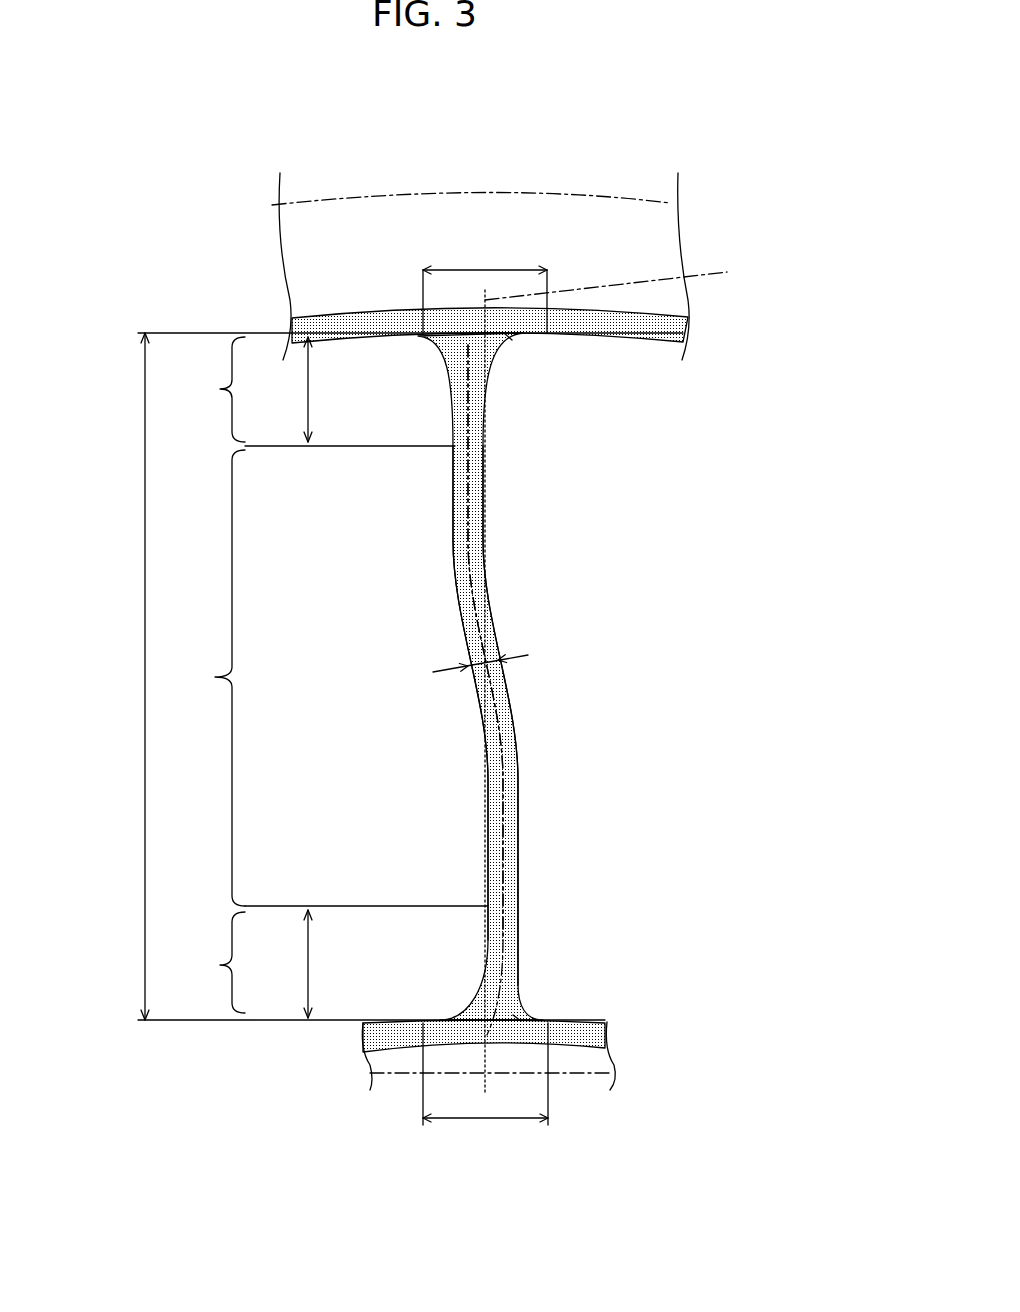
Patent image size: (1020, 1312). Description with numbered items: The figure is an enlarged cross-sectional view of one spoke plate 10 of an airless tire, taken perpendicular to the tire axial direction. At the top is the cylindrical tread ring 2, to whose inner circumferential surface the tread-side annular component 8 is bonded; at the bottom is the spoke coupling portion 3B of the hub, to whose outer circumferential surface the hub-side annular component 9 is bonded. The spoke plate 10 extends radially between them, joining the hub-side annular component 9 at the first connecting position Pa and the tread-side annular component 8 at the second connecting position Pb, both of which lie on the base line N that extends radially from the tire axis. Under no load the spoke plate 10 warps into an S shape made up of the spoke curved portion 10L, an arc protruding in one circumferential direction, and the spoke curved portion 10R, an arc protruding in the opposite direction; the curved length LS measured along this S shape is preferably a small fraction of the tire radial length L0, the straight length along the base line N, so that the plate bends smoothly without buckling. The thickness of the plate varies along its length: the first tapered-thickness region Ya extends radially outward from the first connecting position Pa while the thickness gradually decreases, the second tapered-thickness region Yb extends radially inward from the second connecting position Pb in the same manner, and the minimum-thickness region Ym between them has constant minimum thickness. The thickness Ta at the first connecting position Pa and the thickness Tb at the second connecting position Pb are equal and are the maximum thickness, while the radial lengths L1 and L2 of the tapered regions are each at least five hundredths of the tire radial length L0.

The tread ring 2 is at (600, 197).
The thickness in second connecting position Tb is at (485, 300).
The base line N is at (619, 280).
The tread-side annular component 8 is at (637, 328).
The second connecting position Pb is at (508, 335).
The spoke plate 10 is at (560, 578).
The spoke curved portion 10L is at (452, 547).
The spoke curved portion 10R is at (518, 857).
The curved length LS is at (500, 772).
The first connecting position Pa is at (517, 1018).
The hub-side annular component 9 is at (582, 1035).
The spoke coupling portion 3B is at (397, 1077).
The thickness in first connecting position Ta is at (485, 1123).
The tire radial length L0 is at (145, 672).
The second tapered-thickness region Yb is at (211, 389).
The tire radial length of second tapered-thickness region L2 is at (350, 391).
The minimum-thickness region Ym is at (207, 678).
The first tapered-thickness region Ya is at (211, 962).
The tire radial length of first tapered-thickness region L1 is at (366, 962).